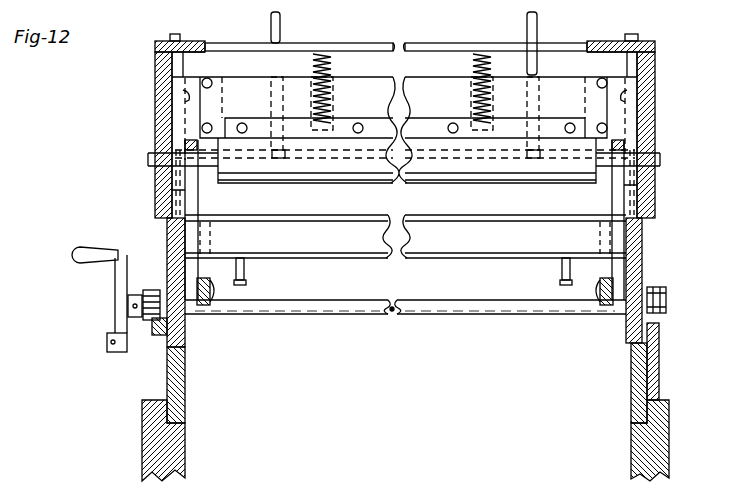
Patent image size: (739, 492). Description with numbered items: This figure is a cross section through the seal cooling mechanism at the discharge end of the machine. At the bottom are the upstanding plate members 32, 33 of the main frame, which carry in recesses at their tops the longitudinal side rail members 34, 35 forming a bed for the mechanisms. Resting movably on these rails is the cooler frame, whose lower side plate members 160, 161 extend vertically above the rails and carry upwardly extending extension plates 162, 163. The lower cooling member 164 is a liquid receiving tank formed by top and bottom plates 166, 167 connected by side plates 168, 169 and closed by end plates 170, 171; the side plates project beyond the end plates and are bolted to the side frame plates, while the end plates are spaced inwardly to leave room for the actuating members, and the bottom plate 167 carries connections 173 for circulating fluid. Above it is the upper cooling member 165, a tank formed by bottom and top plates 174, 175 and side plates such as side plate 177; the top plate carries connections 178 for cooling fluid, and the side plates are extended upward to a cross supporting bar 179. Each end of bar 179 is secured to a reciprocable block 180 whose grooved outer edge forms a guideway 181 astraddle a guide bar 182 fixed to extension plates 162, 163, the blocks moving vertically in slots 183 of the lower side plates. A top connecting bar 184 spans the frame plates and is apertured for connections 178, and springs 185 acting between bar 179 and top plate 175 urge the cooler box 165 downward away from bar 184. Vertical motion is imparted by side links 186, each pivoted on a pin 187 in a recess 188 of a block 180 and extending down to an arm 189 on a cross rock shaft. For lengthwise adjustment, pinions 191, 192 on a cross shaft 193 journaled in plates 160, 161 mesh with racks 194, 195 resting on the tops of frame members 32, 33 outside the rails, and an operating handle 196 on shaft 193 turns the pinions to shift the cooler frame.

The upstanding plate member 32 is at (185, 436).
The upstanding plate member 33 is at (632, 438).
The side rail member 34 is at (185, 392).
The side rail member 35 is at (631, 381).
The lower side plate member 160 is at (185, 336).
The lower side plate member 161 is at (632, 327).
The extension plate 162 is at (157, 125).
The extension plate 163 is at (648, 115).
The lower cooling member 164 is at (434, 232).
The upper cooling member 165 is at (507, 165).
The top plate 166 is at (290, 215).
The bottom plate 167 is at (440, 260).
The side plate 168 is at (397, 218).
The side plate 169 is at (393, 258).
The end closure plate 170 is at (212, 239).
The end closure plate 171 is at (600, 239).
The connections 173 is at (246, 276).
The bottom plate 174 is at (232, 186).
The top plate 175 is at (323, 162).
The side plate 177 is at (342, 125).
The connections 178 is at (280, 31).
The cross supporting bar 179 is at (441, 71).
The reciprocable block 180 is at (175, 91).
The guideway 181 is at (183, 97).
The guide bar 182 is at (183, 64).
The slot 183 is at (172, 193).
The top connecting bar 184 is at (595, 41).
The spring 185 is at (331, 70).
The side link 186 is at (190, 176).
The pin 187 is at (150, 158).
The recess 188 is at (185, 144).
The arm 189 is at (210, 293).
The pinion 191 is at (160, 292).
The pinion 192 is at (651, 292).
The cross shaft 193 is at (394, 315).
The rack 194 is at (151, 333).
The rack 195 is at (655, 329).
The operating handle 196 is at (118, 280).